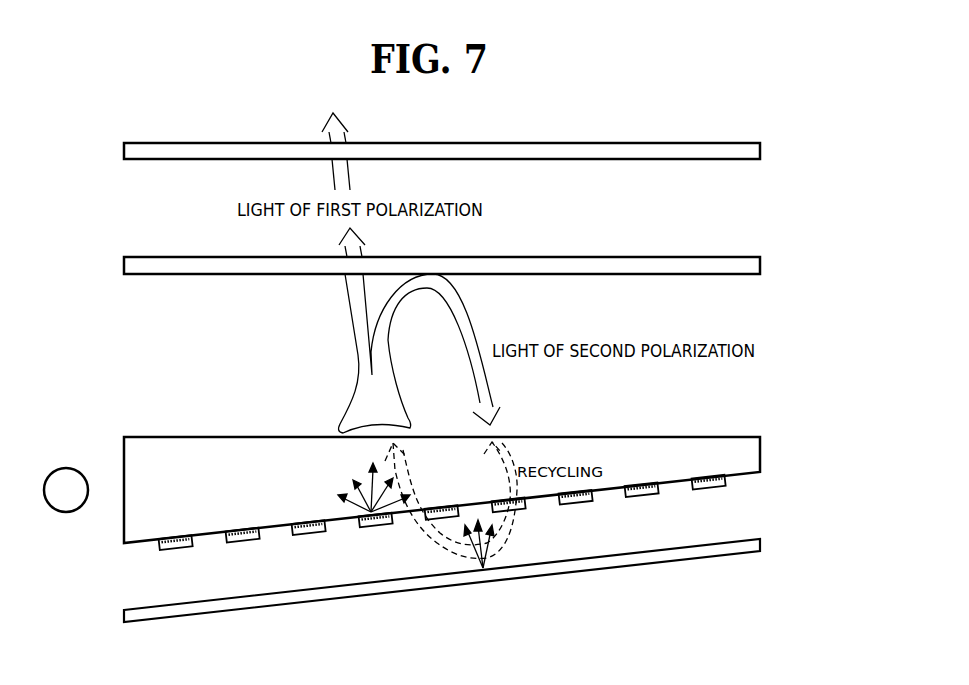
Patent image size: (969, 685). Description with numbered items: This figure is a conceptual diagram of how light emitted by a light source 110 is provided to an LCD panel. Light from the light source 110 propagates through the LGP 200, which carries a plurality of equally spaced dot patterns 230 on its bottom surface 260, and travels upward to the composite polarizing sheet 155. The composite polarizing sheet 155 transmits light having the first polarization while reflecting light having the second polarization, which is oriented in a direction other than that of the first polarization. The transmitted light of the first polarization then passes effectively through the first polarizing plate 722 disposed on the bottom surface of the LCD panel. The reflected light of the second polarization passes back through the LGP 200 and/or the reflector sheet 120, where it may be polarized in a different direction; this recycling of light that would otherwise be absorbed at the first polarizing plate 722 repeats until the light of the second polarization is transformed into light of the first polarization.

The first polarizing plate 722 is at (760, 151).
The composite polarizing sheet 155 is at (760, 265).
The LGP 200 is at (760, 455).
The reflector sheet 120 is at (760, 545).
The dot patterns 230 is at (578, 503).
The bottom surface 260 is at (404, 516).
The light source 110 is at (67, 492).